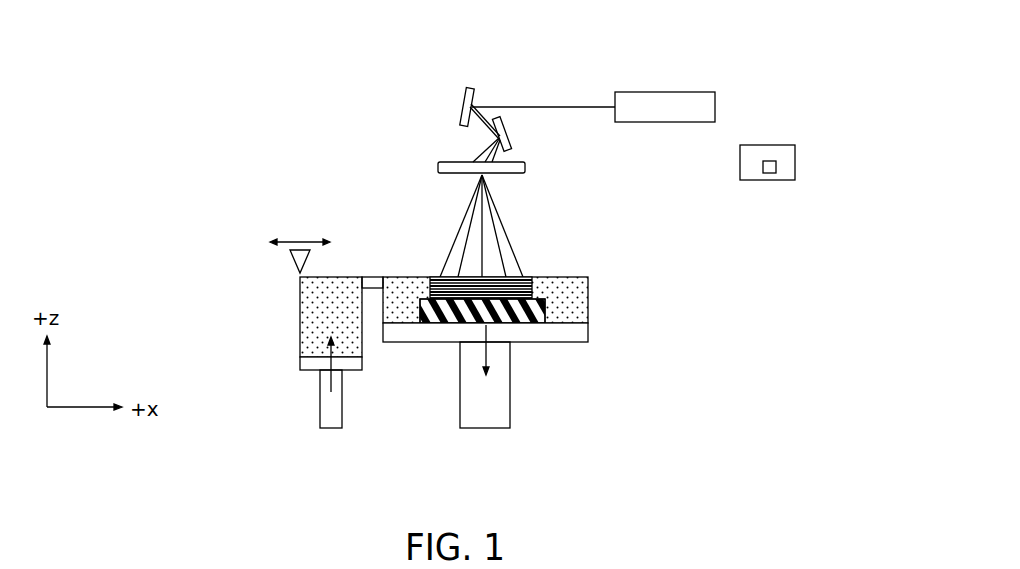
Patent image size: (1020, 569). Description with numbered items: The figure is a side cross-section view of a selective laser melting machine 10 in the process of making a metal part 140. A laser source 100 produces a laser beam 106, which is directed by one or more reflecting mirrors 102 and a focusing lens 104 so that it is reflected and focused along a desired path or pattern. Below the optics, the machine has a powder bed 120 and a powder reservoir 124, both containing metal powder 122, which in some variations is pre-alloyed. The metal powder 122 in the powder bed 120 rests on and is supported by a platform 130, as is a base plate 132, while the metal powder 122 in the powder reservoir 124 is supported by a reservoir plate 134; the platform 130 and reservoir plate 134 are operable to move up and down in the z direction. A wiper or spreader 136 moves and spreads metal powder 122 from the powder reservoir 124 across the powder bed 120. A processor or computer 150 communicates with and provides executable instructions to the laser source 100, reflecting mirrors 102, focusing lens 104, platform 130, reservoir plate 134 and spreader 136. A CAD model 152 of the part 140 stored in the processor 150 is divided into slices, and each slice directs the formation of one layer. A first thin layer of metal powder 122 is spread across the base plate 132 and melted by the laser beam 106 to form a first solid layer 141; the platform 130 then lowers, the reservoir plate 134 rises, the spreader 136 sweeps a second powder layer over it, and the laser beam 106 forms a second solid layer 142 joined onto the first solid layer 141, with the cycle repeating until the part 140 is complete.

The selective laser melting machine 10 is at (797, 102).
The laser source 100 is at (638, 92).
The reflecting mirrors 102 is at (460, 105).
The focusing lens 104 is at (440, 162).
The laser beam 106 is at (512, 245).
The powder bed 120 is at (578, 273).
The metal powder 122 is at (317, 330).
The powder reservoir 124 is at (298, 335).
The platform 130 is at (533, 345).
The base plate 132 is at (547, 315).
The reservoir plate 134 is at (312, 372).
The spreader 136 is at (297, 270).
The part 140 is at (433, 273).
The first solid layer 141 is at (432, 299).
The second solid layer 142 is at (462, 298).
The processor 150 is at (795, 160).
The CAD model 152 is at (770, 173).